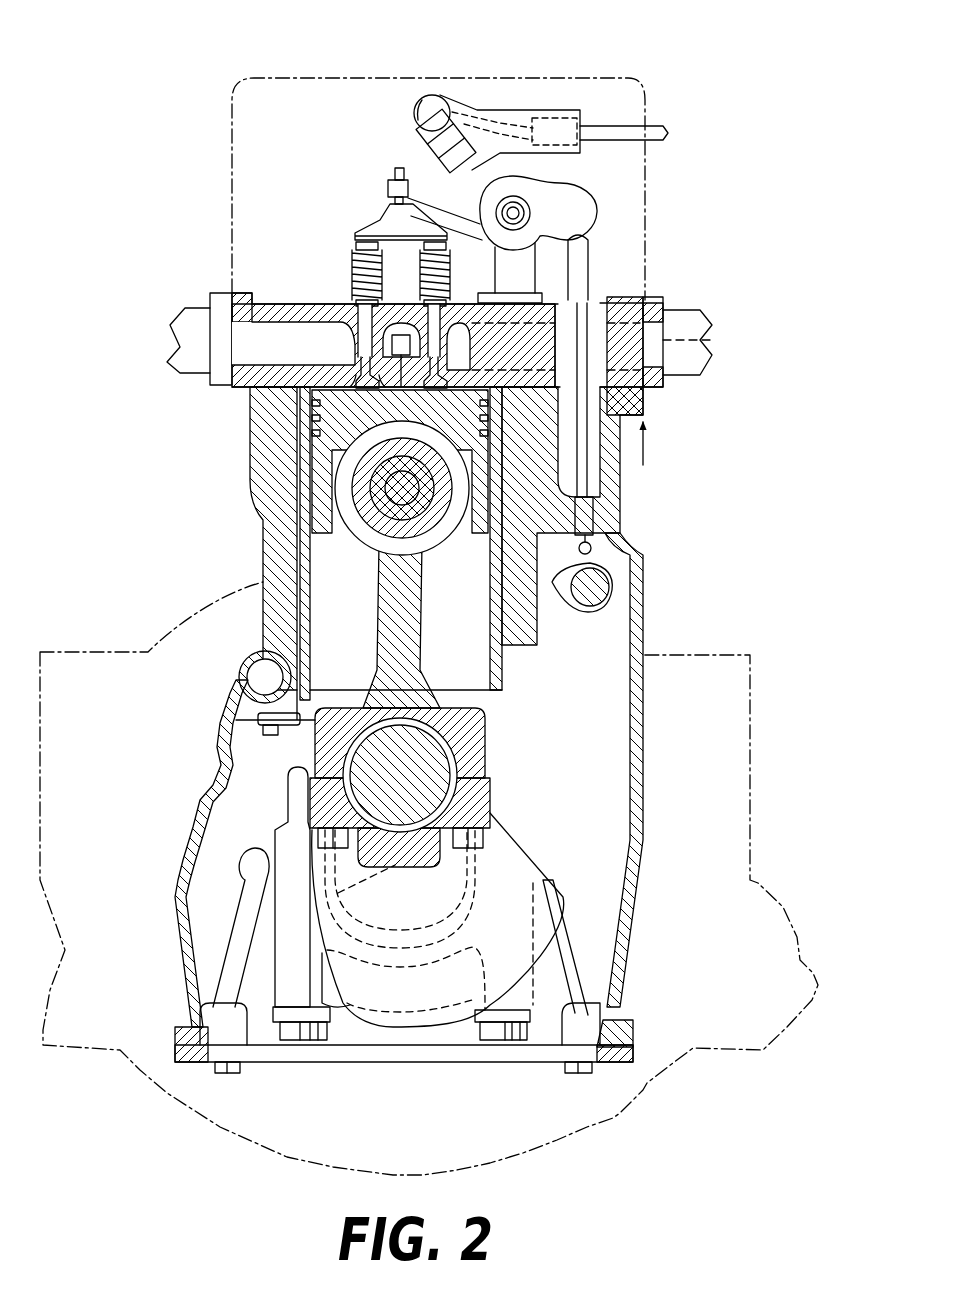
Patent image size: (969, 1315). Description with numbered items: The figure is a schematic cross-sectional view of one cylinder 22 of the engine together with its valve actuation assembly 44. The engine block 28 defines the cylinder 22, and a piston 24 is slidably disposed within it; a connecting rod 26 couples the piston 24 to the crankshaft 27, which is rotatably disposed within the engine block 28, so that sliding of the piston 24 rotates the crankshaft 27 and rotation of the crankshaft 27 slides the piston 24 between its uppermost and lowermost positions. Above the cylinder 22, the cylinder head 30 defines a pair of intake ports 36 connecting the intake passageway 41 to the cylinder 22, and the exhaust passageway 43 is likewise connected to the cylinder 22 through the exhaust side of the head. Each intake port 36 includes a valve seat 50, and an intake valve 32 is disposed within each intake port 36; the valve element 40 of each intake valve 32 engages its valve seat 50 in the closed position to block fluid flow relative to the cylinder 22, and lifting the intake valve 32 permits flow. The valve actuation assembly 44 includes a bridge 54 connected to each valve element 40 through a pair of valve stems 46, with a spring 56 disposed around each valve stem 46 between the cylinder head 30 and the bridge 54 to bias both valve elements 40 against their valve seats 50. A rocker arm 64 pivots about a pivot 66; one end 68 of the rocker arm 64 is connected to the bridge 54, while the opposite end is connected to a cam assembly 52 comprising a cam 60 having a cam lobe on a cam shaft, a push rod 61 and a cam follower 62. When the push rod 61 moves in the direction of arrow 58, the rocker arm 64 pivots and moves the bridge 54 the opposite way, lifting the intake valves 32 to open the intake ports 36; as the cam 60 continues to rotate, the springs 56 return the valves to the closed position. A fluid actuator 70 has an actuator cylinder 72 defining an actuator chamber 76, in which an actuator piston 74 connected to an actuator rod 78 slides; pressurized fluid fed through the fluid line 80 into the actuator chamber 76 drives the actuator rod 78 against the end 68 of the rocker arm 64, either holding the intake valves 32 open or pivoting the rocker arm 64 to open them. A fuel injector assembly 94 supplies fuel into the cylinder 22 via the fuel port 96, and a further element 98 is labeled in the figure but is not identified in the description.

The cylinder 22 is at (314, 572).
The piston 24 is at (318, 505).
The connecting rod 26 is at (422, 672).
The crankshaft 27 is at (522, 852).
The engine block 28 is at (273, 612).
The cylinder head 30 is at (640, 378).
The intake valve 32 is at (362, 318).
The intake port 36 is at (363, 379).
The valve element 40 is at (314, 393).
The intake passageway 41 is at (243, 338).
The exhaust passageway 43 is at (703, 337).
The valve actuation assembly 44 is at (684, 82).
The valve stem 46 is at (350, 278).
The valve seat 50 is at (356, 377).
The cam assembly 52 is at (712, 468).
The bridge 54 is at (385, 226).
The spring 56 is at (352, 250).
The arrow 58 is at (643, 448).
The cam 60 is at (556, 606).
The push rod 61 is at (588, 478).
The cam follower 62 is at (591, 550).
The rocker arm 64 is at (572, 200).
The pivot 66 is at (520, 198).
The end of rocker arm 68 is at (399, 168).
The fluid actuator 70 is at (466, 82).
The actuator cylinder 72 is at (437, 100).
The actuator piston 74 is at (440, 96).
The actuator chamber 76 is at (490, 112).
The actuator rod 78 is at (448, 186).
The fluid line 80 is at (582, 127).
The fuel injector assembly 94 is at (476, 298).
The fuel port 96 is at (398, 470).
The connector 98 is at (547, 127).